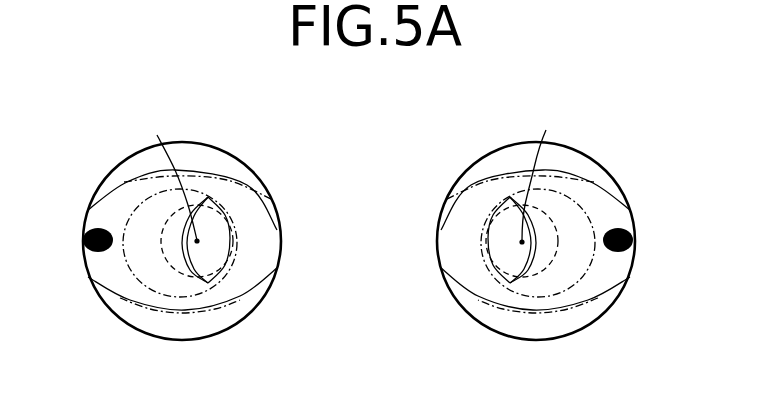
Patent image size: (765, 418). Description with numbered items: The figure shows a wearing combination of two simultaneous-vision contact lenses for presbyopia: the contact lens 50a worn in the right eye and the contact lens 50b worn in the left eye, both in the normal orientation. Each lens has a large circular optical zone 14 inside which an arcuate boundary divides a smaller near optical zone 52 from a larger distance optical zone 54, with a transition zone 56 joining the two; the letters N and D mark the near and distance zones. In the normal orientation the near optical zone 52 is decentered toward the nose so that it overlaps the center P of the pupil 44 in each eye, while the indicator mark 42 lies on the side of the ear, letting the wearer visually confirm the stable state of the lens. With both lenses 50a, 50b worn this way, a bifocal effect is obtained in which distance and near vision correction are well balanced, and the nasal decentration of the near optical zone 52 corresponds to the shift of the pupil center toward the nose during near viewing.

The contact lens 50a is at (255, 150).
The contact lens 50b is at (637, 162).
The optical zone 14 is at (236, 208).
The indicator mark 42 is at (90, 230).
The pupil 44 is at (172, 222).
The near optical zone 52 is at (208, 260).
The distance optical zone 54 is at (150, 268).
The transition zone 56 is at (184, 262).